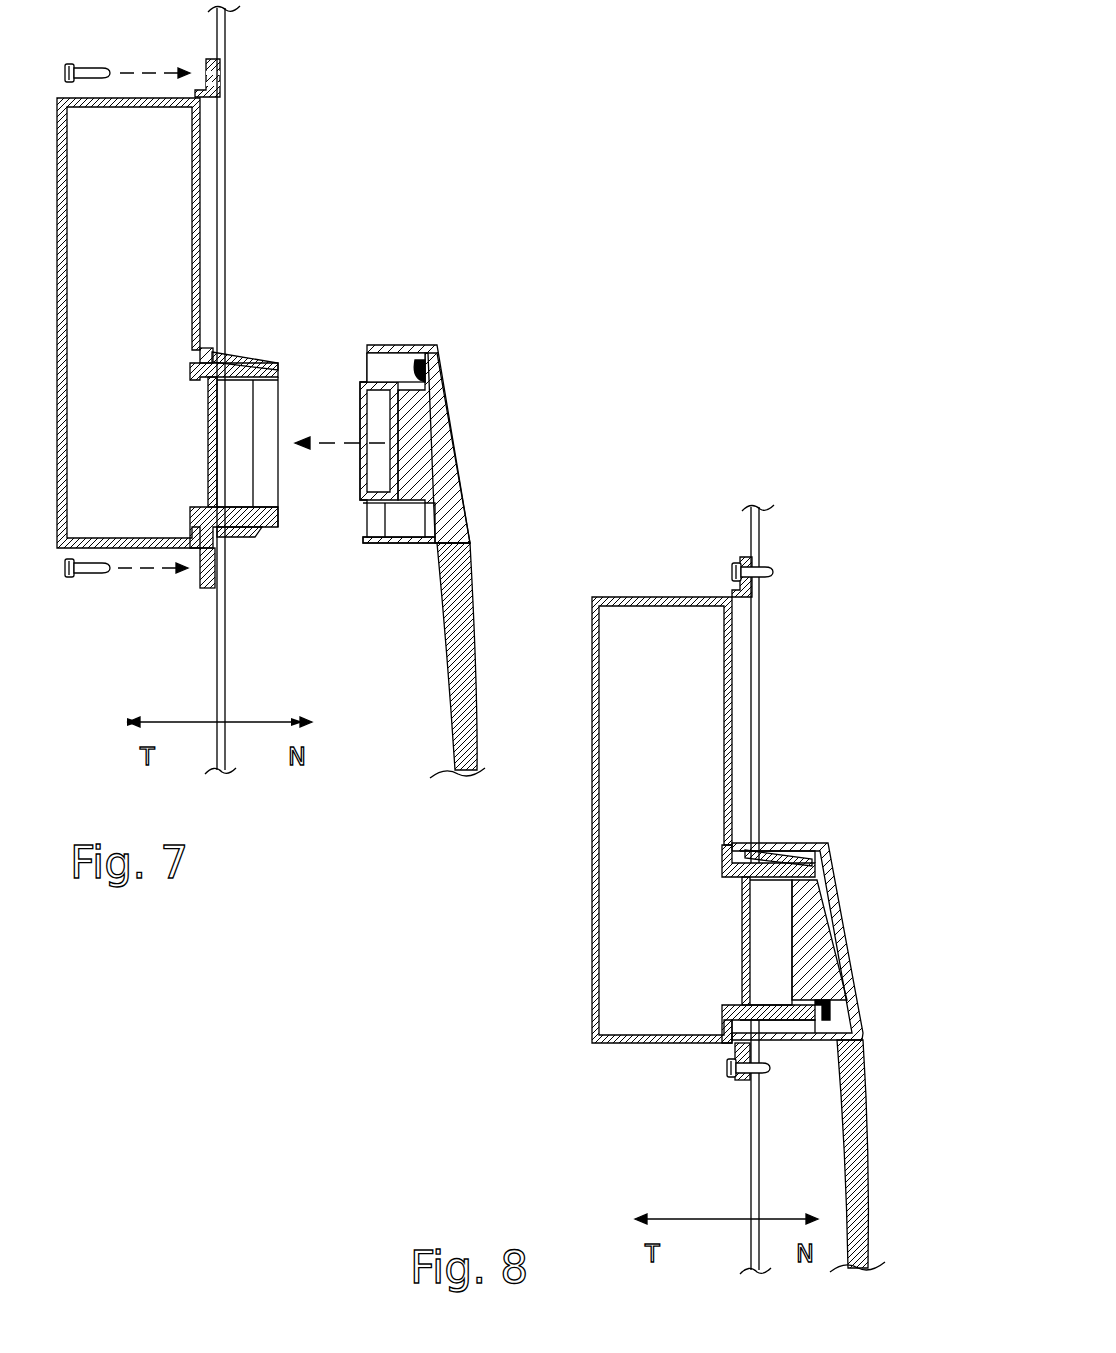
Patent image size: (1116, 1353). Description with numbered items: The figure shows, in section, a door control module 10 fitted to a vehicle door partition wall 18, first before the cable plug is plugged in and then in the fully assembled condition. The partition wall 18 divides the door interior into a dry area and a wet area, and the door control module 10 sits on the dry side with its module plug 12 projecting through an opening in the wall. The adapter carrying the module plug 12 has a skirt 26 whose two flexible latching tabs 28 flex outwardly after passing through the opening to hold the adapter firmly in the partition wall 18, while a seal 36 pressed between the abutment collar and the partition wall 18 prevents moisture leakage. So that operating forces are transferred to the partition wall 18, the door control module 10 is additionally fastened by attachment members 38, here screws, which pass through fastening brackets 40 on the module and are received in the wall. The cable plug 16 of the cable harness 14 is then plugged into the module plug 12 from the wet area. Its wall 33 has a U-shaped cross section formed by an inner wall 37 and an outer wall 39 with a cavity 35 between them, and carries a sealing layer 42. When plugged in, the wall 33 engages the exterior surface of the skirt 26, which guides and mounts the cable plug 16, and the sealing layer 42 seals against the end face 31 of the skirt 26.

In FIG. 7, the door control module 10 is at (65, 270).
In FIG. 8, the door control module 10 is at (592, 988).
In FIG. 7, the module plug 12 is at (273, 438).
In FIG. 8, the module plug 12 is at (811, 902).
In FIG. 7, the cable harness 14 is at (453, 665).
In FIG. 8, the cable harness 14 is at (850, 1162).
In FIG. 7, the cable plug 16 is at (431, 454).
In FIG. 8, the cable plug 16 is at (825, 941).
In FIG. 7, the partition wall 18 is at (222, 157).
In FIG. 8, the partition wall 18 is at (757, 655).
In FIG. 7, the skirt 26 is at (262, 495).
In FIG. 7, the latching tabs 28 is at (240, 537).
In FIG. 7, the end face 31 is at (280, 365).
In FIG. 8, the end face 31 is at (833, 860).
In FIG. 7, the wall 33 is at (425, 345).
In FIG. 7, the cavity 35 is at (385, 370).
In FIG. 8, the cavity 35 is at (803, 857).
In FIG. 7, the seal 36 is at (215, 355).
In FIG. 7, the inner wall 37 is at (377, 545).
In FIG. 7, the attachment member 38 is at (93, 73).
In FIG. 8, the attachment member 38 is at (725, 1077).
In FIG. 7, the outer wall 39 is at (405, 545).
In FIG. 7, the fastening brackets 40 is at (208, 62).
In FIG. 7, the sealing layer 42 is at (415, 375).
In FIG. 8, the sealing layer 42 is at (810, 998).